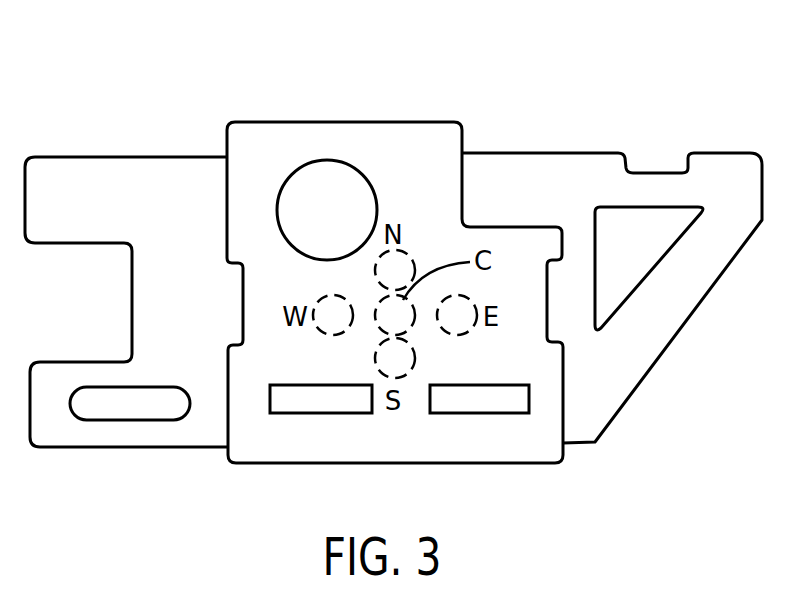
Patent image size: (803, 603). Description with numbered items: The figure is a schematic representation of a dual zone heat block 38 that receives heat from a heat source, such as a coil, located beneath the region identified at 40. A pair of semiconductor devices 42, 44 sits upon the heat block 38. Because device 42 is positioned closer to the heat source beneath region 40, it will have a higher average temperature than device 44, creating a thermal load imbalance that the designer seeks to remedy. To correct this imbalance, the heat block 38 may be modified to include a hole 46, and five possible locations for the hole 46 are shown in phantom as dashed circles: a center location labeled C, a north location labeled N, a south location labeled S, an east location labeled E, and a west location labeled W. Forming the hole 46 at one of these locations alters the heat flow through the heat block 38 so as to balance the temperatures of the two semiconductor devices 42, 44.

The dual zone heat block 38 is at (621, 90).
The region 40 is at (302, 163).
The semiconductor device 42 is at (302, 400).
The semiconductor device 44 is at (500, 400).
The hole 46 is at (332, 332).